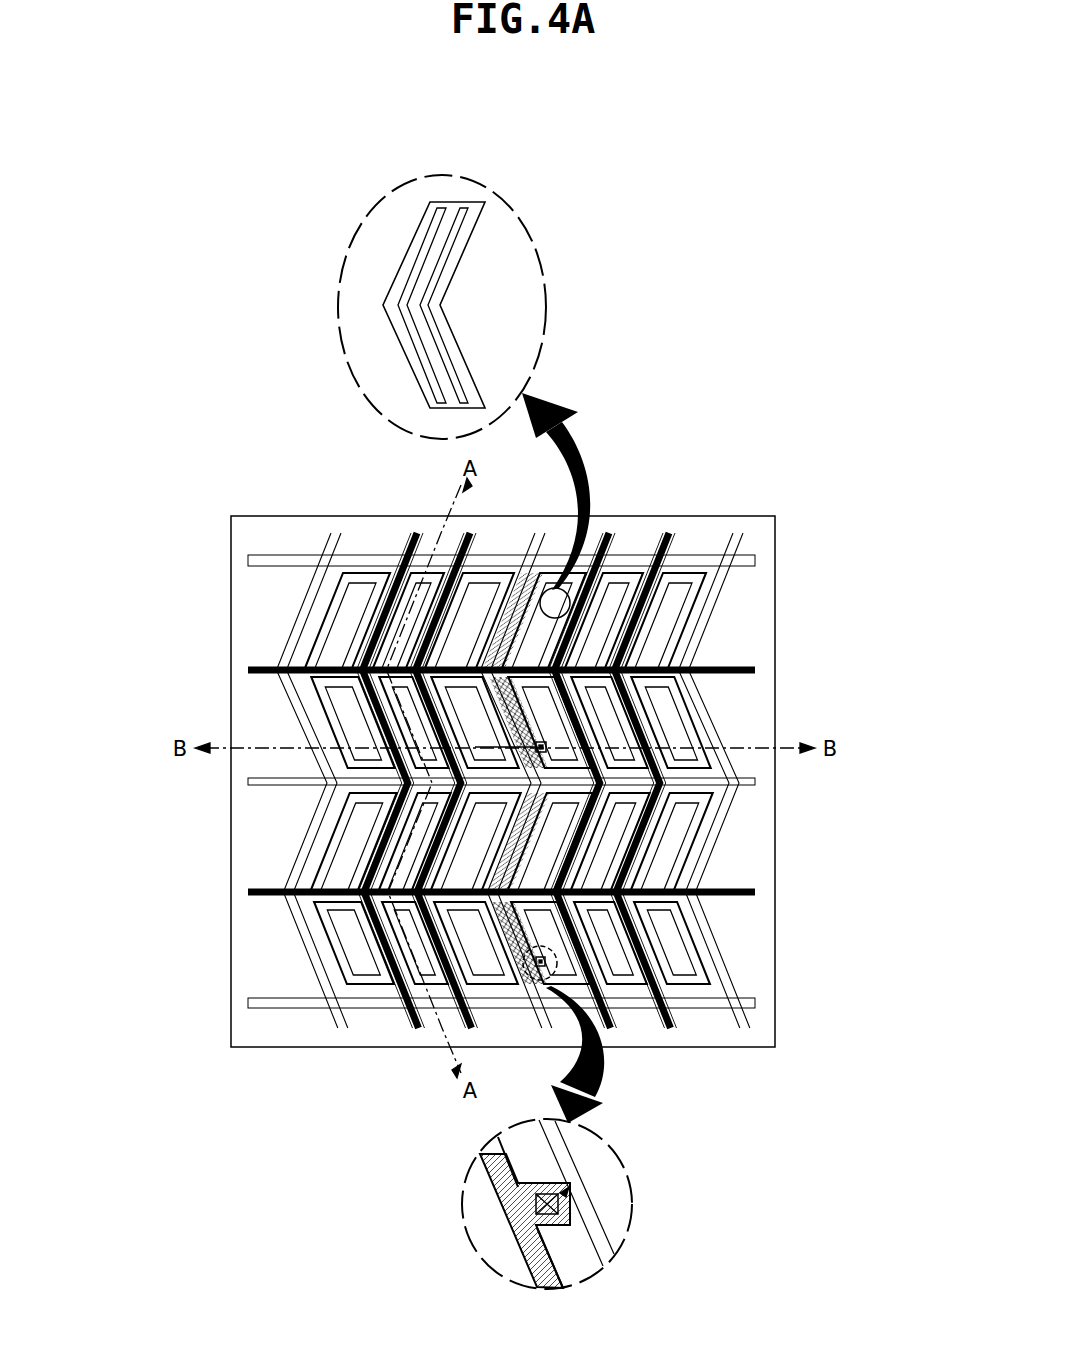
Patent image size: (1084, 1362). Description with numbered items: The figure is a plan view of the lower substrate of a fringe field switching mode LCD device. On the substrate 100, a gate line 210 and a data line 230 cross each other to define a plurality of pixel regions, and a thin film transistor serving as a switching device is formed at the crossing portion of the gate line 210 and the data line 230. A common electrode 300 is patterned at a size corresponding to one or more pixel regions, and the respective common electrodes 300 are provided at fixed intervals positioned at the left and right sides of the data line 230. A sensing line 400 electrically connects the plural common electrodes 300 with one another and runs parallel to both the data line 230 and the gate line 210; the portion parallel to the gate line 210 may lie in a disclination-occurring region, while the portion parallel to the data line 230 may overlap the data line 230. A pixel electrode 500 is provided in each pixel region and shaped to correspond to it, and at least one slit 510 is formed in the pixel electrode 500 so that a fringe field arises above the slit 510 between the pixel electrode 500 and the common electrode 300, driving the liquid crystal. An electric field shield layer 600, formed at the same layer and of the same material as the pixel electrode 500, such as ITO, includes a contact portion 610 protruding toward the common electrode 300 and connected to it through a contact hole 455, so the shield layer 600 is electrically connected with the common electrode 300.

The substrate 100 is at (775, 849).
The gate line 210 is at (693, 552).
The data line 230 is at (737, 538).
The common electrode 300 is at (713, 812).
The sensing line 400 is at (632, 712).
The contact hole 455 is at (564, 1191).
The pixel electrode 500 is at (648, 655).
The slit 510 is at (465, 208).
The electric field shield layer 600 is at (530, 985).
The contact portion 610 is at (567, 1193).